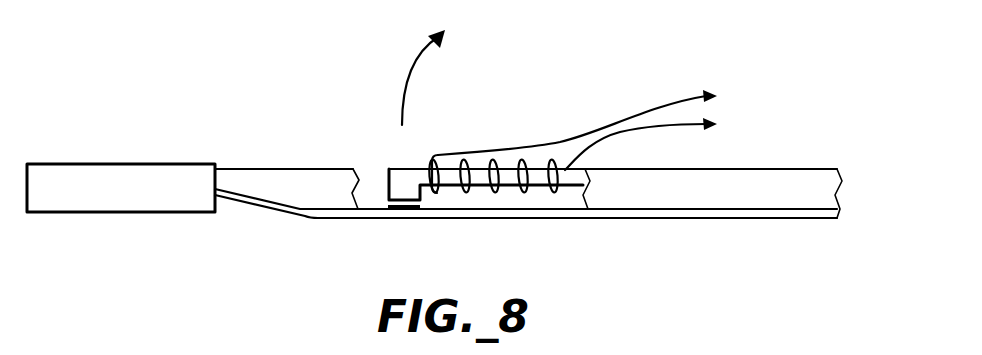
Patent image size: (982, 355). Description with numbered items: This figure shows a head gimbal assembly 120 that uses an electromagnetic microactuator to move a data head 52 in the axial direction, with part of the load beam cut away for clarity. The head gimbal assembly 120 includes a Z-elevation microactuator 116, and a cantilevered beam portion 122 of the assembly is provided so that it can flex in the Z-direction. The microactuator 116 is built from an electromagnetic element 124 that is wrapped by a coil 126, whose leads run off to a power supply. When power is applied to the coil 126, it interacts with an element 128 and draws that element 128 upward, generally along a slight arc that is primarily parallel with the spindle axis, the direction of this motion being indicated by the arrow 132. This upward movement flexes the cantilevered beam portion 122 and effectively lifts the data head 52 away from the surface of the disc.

The data head 52 is at (97, 224).
The Z-elevation microactuator 116 is at (509, 158).
The head gimbal assembly 120 is at (100, 158).
The cantilevered beam portion 122 is at (535, 222).
The electromagnetic element 124 is at (406, 182).
The coil 126 is at (548, 142).
The element 128 is at (403, 212).
The arrow 132 is at (406, 70).